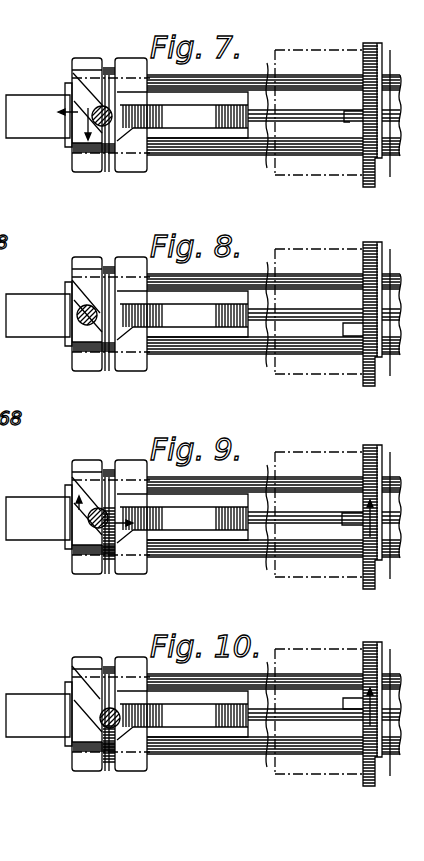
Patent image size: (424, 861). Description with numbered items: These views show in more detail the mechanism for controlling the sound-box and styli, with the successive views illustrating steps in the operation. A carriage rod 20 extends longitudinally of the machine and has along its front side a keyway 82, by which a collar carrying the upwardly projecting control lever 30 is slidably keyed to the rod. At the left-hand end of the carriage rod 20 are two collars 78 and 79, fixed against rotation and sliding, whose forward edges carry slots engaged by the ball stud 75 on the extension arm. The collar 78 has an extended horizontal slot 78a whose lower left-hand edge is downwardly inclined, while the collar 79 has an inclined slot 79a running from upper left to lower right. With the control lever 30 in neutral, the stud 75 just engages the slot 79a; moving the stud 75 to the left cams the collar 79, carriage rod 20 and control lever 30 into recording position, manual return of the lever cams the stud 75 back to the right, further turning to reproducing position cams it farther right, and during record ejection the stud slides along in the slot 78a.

In FIG. 7, the carriage rod 20 is at (258, 145).
In FIG. 8, the carriage rod 20 is at (273, 333).
In FIG. 9, the carriage rod 20 is at (273, 536).
In FIG. 10, the carriage rod 20 is at (273, 733).
In FIG. 7, the control lever 30 is at (367, 47).
In FIG. 8, the control lever 30 is at (356, 306).
In FIG. 9, the control lever 30 is at (356, 509).
In FIG. 10, the control lever 30 is at (356, 706).
In FIG. 7, the ball stud 75 is at (107, 126).
In FIG. 8, the ball stud 75 is at (66, 342).
In FIG. 9, the ball stud 75 is at (74, 550).
In FIG. 10, the ball stud 75 is at (82, 751).
In FIG. 7, the collar 78 is at (130, 63).
In FIG. 8, the collar 78 is at (131, 301).
In FIG. 9, the collar 78 is at (131, 504).
In FIG. 10, the collar 78 is at (131, 701).
In FIG. 7, the horizontal slot 78a is at (184, 116).
In FIG. 8, the horizontal slot 78a is at (184, 315).
In FIG. 9, the horizontal slot 78a is at (184, 518).
In FIG. 10, the horizontal slot 78a is at (184, 715).
In FIG. 7, the collar 79 is at (84, 63).
In FIG. 8, the collar 79 is at (84, 302).
In FIG. 9, the collar 79 is at (84, 505).
In FIG. 10, the collar 79 is at (84, 702).
In FIG. 7, the inclined slot 79a is at (77, 92).
In FIG. 8, the inclined slot 79a is at (64, 294).
In FIG. 9, the inclined slot 79a is at (64, 497).
In FIG. 10, the inclined slot 79a is at (64, 694).
In FIG. 7, the keyway 82 is at (349, 110).
In FIG. 8, the keyway 82 is at (339, 313).
In FIG. 9, the keyway 82 is at (339, 507).
In FIG. 10, the keyway 82 is at (332, 699).